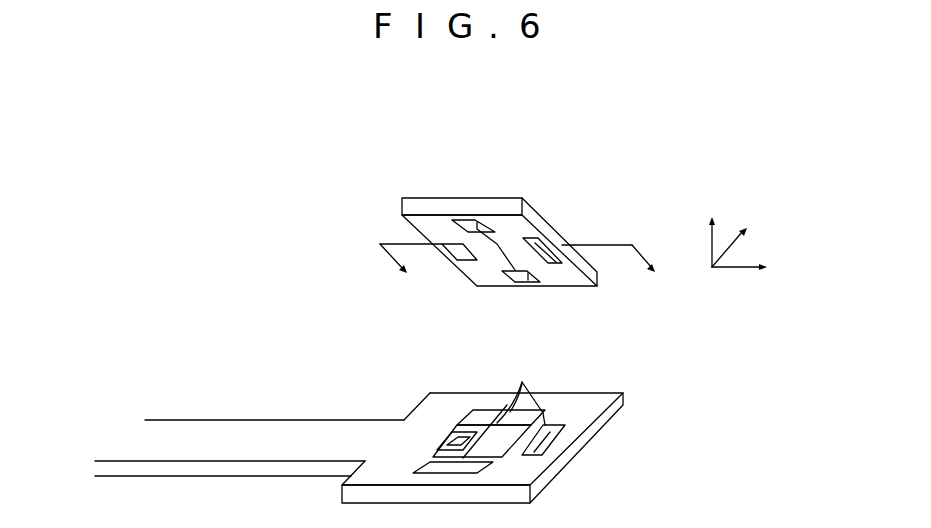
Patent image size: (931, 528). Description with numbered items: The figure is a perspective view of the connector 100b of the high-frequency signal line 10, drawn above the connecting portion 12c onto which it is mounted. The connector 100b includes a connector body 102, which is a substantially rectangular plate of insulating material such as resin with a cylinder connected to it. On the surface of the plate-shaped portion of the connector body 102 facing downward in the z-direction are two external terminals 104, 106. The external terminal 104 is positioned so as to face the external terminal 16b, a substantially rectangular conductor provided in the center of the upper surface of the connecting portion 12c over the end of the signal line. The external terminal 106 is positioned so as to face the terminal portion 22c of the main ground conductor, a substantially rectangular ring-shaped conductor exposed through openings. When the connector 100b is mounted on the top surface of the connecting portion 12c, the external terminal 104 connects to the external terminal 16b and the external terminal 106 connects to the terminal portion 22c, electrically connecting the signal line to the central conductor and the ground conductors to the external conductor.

The high-frequency signal line 10 is at (180, 285).
The connector 100b is at (460, 186).
The connector body 102 is at (402, 216).
The external terminal 104 is at (457, 254).
The external terminal 106 is at (532, 291).
The connecting portion 12c is at (563, 462).
The external terminal 16b is at (456, 440).
The terminal portion 22c is at (522, 381).